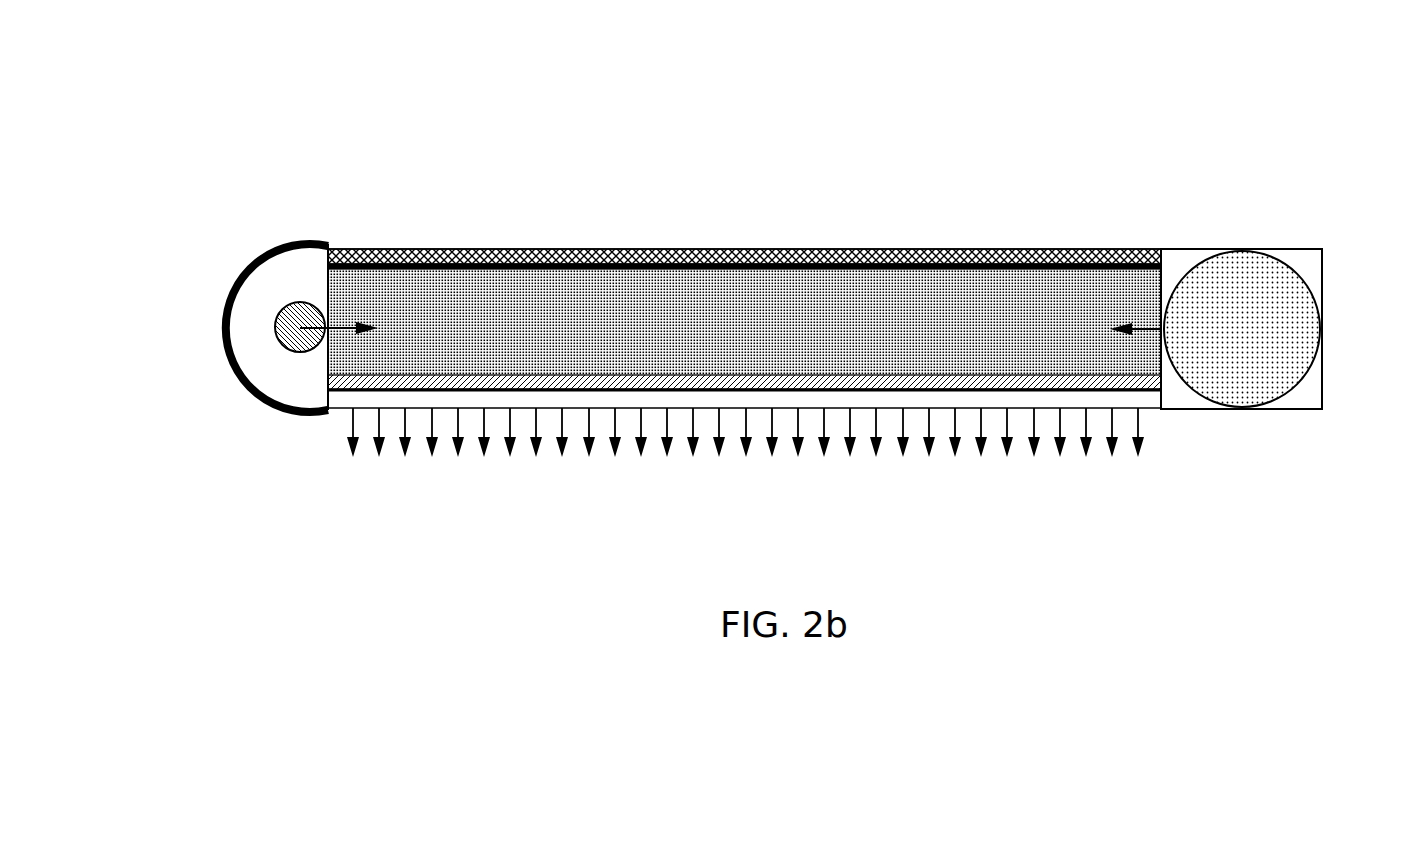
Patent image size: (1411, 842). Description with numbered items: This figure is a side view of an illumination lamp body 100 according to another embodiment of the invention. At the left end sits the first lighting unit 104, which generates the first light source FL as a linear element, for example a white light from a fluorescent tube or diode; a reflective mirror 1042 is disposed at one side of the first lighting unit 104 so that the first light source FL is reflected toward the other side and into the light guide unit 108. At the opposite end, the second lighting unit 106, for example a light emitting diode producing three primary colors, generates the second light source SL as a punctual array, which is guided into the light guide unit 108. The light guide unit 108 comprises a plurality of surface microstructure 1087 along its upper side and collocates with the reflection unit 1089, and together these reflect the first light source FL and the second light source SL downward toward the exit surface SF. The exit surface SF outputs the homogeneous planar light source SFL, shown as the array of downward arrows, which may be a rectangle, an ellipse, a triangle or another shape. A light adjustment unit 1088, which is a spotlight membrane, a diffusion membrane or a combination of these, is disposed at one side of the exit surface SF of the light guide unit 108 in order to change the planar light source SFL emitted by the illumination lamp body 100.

The illumination lamp body 100 is at (774, 267).
The first lighting unit 104 is at (297, 322).
The reflective mirror 1042 is at (240, 386).
The second lighting unit 106 is at (1277, 317).
The light guide unit 108 is at (882, 338).
The surface microstructure 1087 is at (702, 266).
The light adjustment unit 1088 is at (984, 395).
The reflection unit 1089 is at (1118, 254).
The first light source FL is at (350, 327).
The second light source SL is at (1145, 330).
The planar light source SFL is at (426, 418).
The exit surface SF is at (1080, 380).